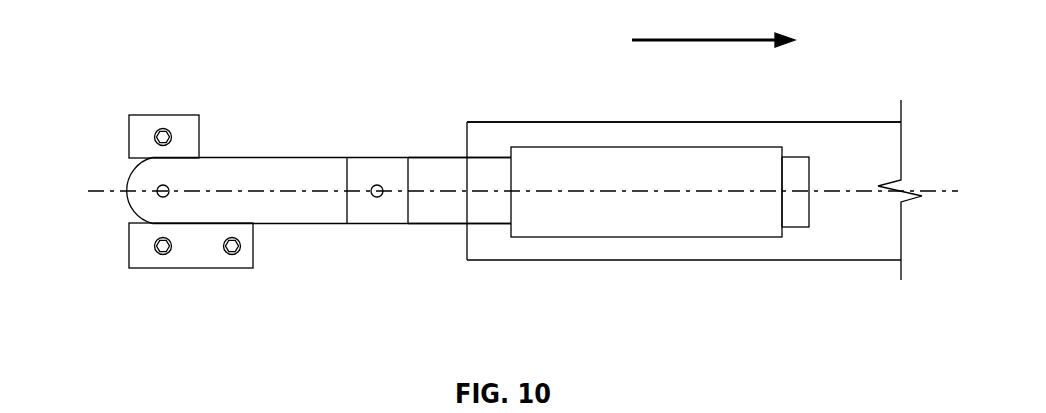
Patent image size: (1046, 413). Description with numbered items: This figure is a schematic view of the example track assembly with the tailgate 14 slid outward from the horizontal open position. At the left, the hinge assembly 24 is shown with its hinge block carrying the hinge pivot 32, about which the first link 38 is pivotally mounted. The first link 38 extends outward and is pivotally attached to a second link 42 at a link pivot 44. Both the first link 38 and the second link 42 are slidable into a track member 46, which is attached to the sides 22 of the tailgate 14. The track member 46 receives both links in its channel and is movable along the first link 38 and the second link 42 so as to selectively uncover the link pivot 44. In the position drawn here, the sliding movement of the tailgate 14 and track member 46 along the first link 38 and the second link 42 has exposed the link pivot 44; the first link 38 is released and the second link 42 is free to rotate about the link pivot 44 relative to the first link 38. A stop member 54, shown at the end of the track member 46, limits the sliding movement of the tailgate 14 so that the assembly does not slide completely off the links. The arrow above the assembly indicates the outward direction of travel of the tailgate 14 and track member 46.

The tailgate 14 is at (813, 119).
The sides of the tailgate 22 is at (852, 230).
The hinge assembly 24 is at (120, 216).
The hinge pivot 32 is at (160, 186).
The first link 38 is at (213, 203).
The second link 42 is at (445, 204).
The link pivot 44 is at (377, 185).
The track member 46 is at (662, 212).
The stop member 54 is at (795, 212).